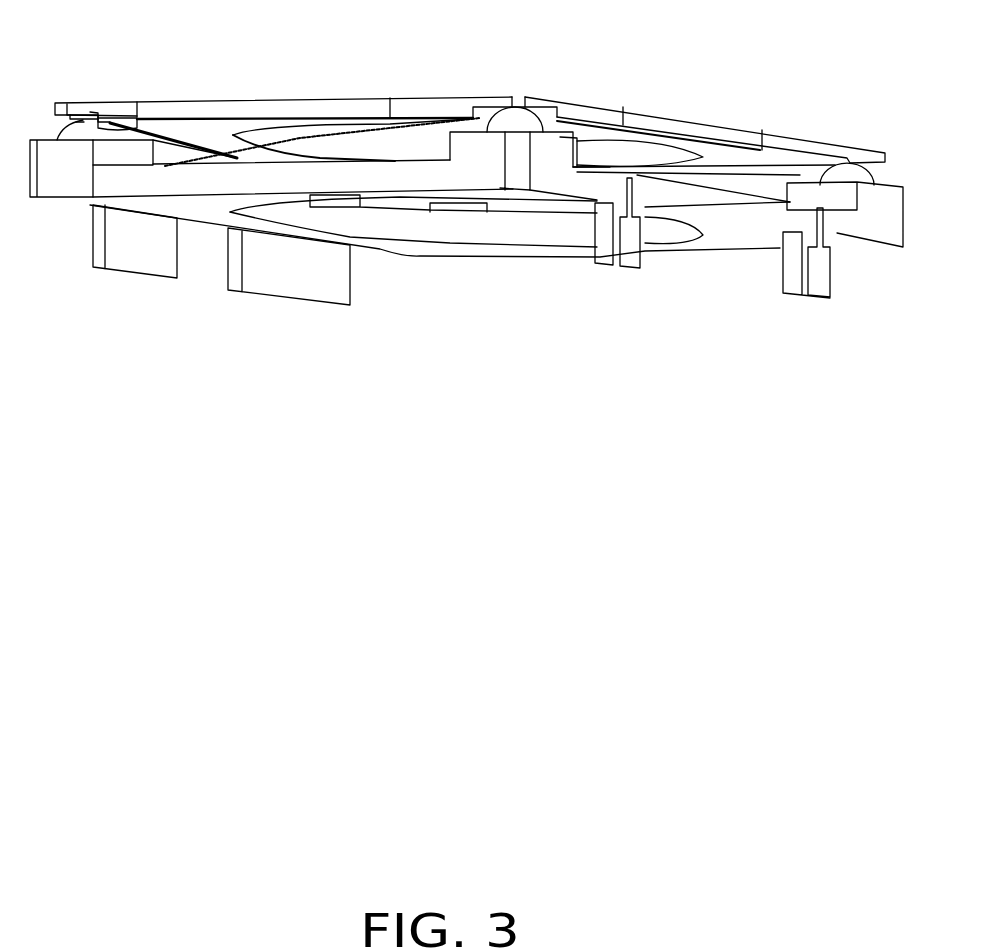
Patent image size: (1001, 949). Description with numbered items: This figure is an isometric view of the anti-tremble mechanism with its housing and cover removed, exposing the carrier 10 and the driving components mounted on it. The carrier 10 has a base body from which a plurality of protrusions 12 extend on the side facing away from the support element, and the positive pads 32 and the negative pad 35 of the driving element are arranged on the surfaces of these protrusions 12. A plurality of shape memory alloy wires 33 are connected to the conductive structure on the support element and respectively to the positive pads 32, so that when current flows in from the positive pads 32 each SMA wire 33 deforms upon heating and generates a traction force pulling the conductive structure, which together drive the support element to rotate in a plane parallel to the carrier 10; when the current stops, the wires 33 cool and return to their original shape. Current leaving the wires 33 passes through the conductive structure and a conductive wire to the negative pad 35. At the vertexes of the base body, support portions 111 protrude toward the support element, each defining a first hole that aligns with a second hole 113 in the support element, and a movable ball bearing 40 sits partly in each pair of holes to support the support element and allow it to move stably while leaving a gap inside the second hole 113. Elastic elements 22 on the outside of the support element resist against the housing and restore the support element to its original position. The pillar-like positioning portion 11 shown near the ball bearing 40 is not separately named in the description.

The carrier 10 is at (243, 182).
The positioning portion 11 is at (473, 155).
The protrusions 12 is at (141, 257).
The support portion 111 is at (58, 153).
The second hole 113 is at (80, 116).
The elastic elements 22 is at (710, 132).
The positive pads 32 is at (627, 266).
The shape memory alloy wires 33 is at (312, 142).
The negative pad 35 is at (297, 283).
The ball bearing 40 is at (100, 127).